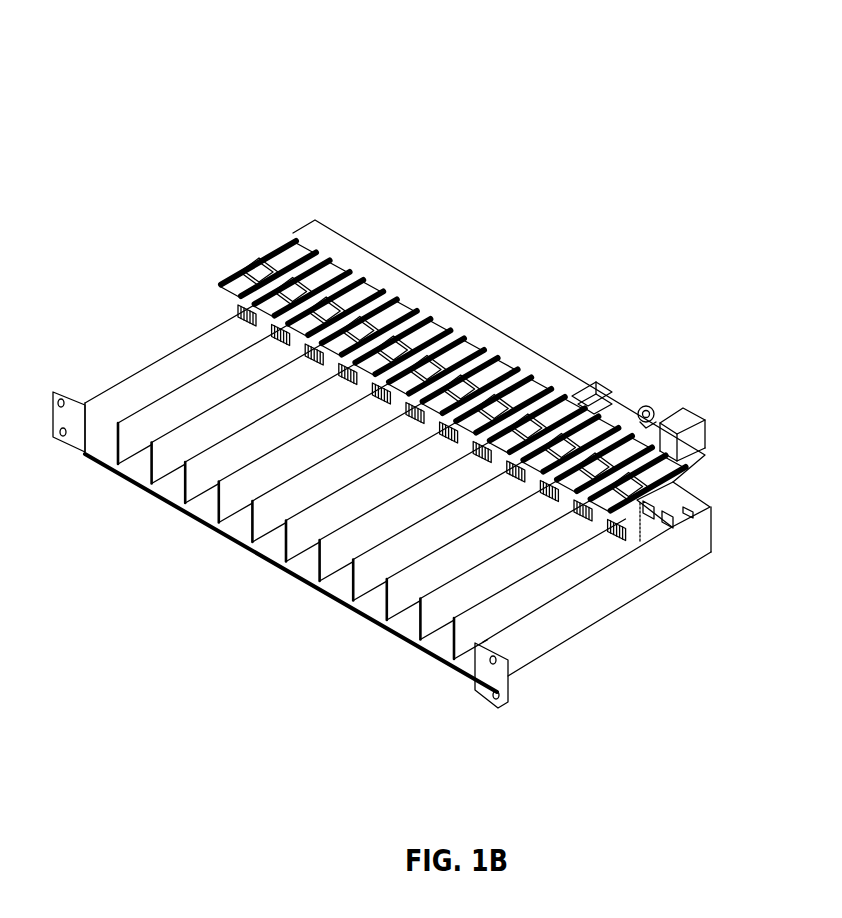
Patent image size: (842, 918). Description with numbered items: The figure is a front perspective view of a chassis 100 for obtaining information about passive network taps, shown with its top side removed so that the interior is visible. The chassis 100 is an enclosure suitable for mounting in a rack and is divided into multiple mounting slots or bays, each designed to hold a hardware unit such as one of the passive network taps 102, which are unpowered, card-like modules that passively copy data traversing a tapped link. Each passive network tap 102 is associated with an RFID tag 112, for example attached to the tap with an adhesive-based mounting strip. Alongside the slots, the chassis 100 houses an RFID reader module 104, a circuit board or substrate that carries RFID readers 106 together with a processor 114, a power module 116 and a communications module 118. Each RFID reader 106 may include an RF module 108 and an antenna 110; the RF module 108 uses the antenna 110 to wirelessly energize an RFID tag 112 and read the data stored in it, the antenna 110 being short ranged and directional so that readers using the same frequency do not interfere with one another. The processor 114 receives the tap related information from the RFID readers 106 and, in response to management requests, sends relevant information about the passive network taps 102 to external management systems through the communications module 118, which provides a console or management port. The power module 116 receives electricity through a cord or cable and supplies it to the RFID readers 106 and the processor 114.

The chassis 100 is at (410, 508).
The passive network taps 102 is at (343, 472).
The RFID reader module 104 is at (499, 313).
The RFID readers 106 is at (186, 175).
The RF module 108 is at (231, 199).
The antenna 110 is at (185, 242).
The RFID tags 112 is at (190, 291).
The processor 114 is at (662, 316).
The power module 116 is at (711, 357).
The communications module 118 is at (739, 404).